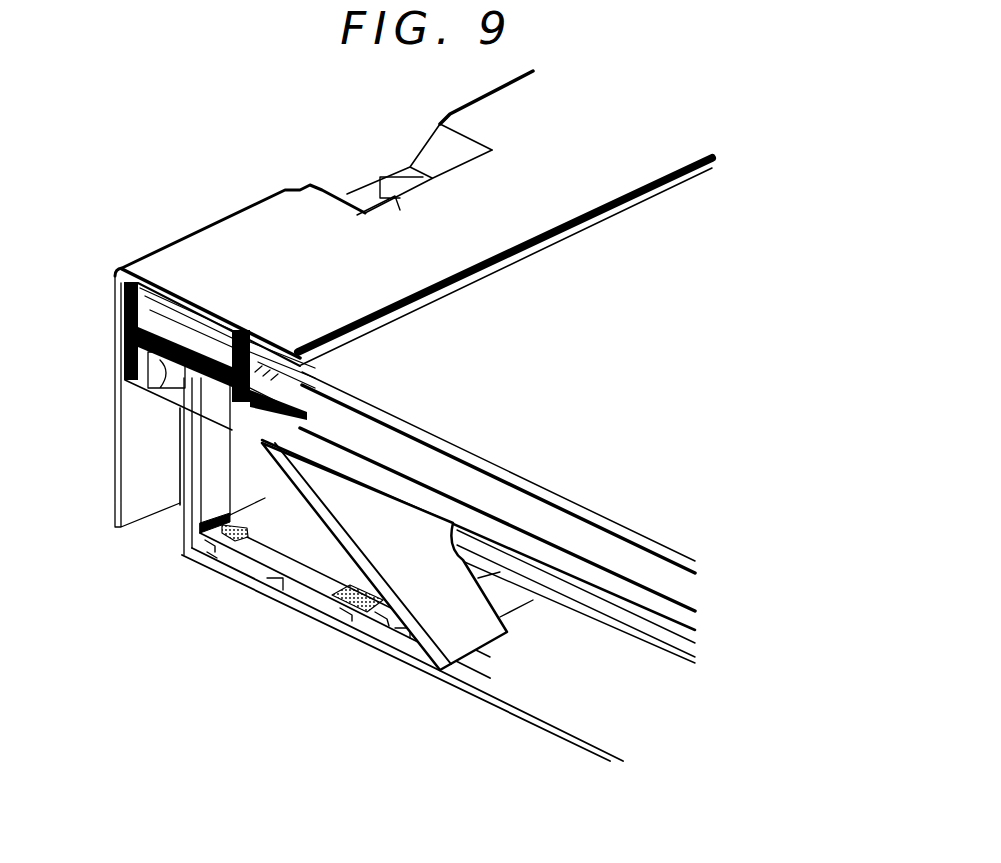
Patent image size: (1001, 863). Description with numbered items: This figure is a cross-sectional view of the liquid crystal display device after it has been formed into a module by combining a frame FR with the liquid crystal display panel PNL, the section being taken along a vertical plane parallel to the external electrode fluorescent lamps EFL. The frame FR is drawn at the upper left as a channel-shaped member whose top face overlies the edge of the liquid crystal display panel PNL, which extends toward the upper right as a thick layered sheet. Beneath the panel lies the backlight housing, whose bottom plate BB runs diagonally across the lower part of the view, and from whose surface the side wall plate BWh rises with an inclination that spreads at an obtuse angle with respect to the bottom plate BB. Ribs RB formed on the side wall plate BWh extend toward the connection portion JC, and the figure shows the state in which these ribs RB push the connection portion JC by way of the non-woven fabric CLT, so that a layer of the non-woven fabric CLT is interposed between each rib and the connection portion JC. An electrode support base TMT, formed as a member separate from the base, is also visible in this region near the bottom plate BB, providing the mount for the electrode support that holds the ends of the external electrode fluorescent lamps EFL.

The frame FR is at (243, 248).
The liquid crystal display panel PNL is at (598, 265).
The ribs RB is at (258, 461).
The connection portion JC is at (183, 528).
The non-woven fabric CLT is at (215, 543).
The electrode support base TMT is at (282, 560).
The side wall plate BWh is at (440, 620).
The bottom plate BB is at (540, 658).
The external electrode fluorescent lamps EFL is at (645, 633).